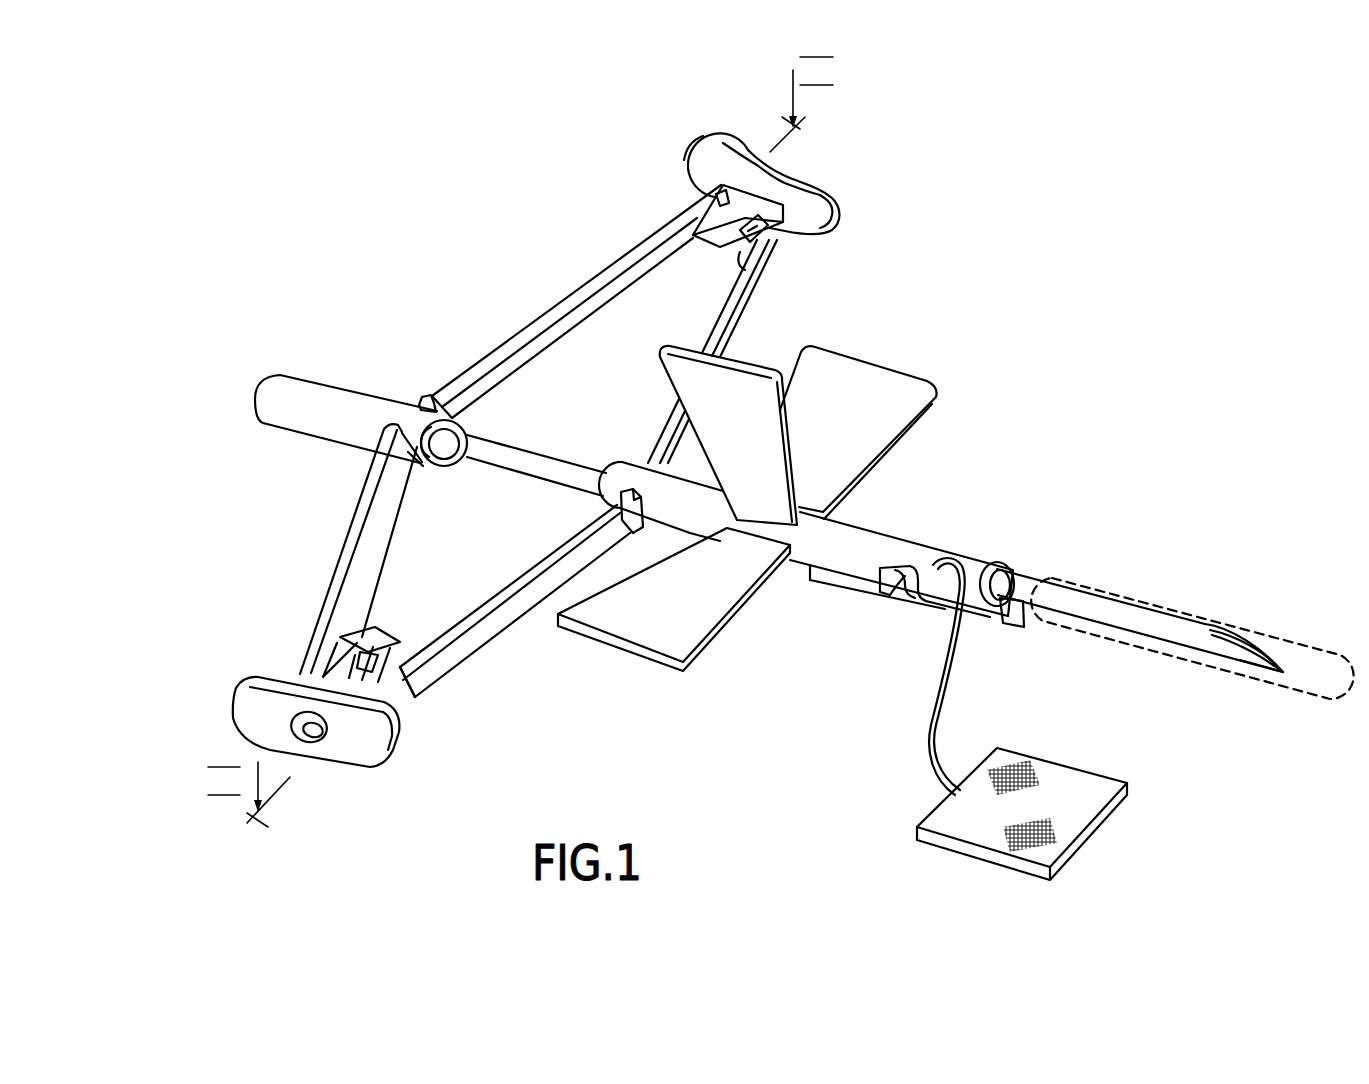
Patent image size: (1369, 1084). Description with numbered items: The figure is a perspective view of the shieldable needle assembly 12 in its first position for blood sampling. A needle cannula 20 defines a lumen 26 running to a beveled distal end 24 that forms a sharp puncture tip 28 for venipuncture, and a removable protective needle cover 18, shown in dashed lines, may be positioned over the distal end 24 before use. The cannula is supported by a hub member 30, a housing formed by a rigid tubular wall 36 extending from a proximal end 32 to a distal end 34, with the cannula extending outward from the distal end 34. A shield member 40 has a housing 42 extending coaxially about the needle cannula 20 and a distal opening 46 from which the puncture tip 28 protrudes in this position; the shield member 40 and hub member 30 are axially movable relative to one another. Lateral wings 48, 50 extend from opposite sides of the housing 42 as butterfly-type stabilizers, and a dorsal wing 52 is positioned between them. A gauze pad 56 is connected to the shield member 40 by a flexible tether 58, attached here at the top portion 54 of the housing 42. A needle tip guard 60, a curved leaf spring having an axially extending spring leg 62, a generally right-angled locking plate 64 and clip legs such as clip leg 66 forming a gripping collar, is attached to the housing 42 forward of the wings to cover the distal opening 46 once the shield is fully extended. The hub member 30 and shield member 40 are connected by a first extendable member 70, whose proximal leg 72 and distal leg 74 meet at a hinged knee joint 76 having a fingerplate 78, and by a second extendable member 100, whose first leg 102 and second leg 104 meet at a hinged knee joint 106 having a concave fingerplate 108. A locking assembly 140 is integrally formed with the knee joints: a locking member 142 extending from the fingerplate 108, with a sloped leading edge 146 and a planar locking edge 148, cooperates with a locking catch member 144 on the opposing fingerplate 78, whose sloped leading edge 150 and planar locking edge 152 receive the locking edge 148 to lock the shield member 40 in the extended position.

The shieldable needle assembly 12 is at (266, 156).
The removable protective needle cover 18 is at (1310, 647).
The needle cannula 20 is at (1141, 633).
The distal end 24 is at (1238, 680).
The lumen 26 is at (1243, 638).
The puncture tip 28 is at (1281, 672).
The hub member 30 is at (228, 440).
The proximal end 32 is at (269, 410).
The distal end 34 is at (428, 467).
The tubular wall 36 is at (367, 433).
The shield member 40 is at (921, 481).
The housing 42 is at (870, 543).
The distal opening 46 is at (1010, 567).
The lateral wing 48 is at (612, 645).
The lateral wing 50 is at (937, 395).
The dorsal wing 52 is at (760, 454).
The top portion 54 is at (941, 548).
The gauze pad 56 is at (1097, 823).
The tether 58 is at (932, 720).
The needle tip guard 60 is at (873, 672).
The spring leg 62 is at (840, 587).
The locking plate 64 is at (1017, 613).
The clip leg 66 is at (900, 588).
The first extendable member 70 is at (263, 613).
The first leg 72 is at (392, 537).
The second leg 74 is at (498, 586).
The hinged knee joint 76 is at (420, 675).
The fingerplate 78 is at (363, 753).
The second extendable member 100 is at (539, 252).
The first leg 102 is at (623, 287).
The second leg 104 is at (713, 323).
The hinged knee joint 106 is at (798, 217).
The fingerplate 108 is at (710, 160).
The locking assembly 140 is at (678, 209).
The locking member 142 is at (740, 212).
The locking catch member 144 is at (322, 645).
The sloped leading edge 146 is at (735, 253).
The locking edge 148 is at (745, 240).
The sloped leading edge 150 is at (386, 630).
The locking edge 152 is at (398, 693).